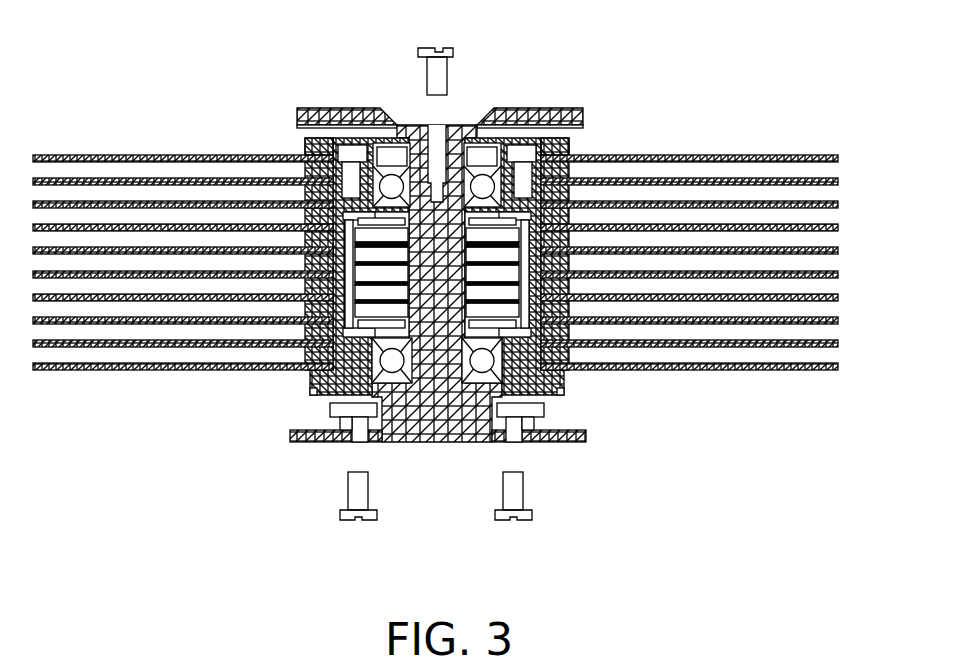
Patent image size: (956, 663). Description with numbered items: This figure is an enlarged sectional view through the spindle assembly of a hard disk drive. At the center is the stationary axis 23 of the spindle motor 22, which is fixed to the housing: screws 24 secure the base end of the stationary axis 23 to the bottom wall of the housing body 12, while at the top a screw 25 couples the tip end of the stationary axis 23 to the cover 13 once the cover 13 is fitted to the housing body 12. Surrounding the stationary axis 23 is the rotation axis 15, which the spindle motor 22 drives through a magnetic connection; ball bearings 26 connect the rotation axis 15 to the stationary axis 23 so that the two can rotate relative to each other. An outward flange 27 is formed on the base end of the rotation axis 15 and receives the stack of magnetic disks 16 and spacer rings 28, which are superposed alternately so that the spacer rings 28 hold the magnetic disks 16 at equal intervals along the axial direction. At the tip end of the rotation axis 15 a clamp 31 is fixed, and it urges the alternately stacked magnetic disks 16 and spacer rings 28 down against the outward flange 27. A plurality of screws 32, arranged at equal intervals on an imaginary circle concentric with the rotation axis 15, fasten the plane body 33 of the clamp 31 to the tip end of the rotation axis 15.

The housing body 12 is at (580, 444).
The cover 13 is at (525, 108).
The rotation axis 15 is at (545, 397).
The magnetic disks 16 is at (840, 158).
The spindle motor 22 is at (291, 391).
The stationary axis 23 is at (392, 443).
The screws 24 is at (340, 513).
The screw 25 is at (453, 50).
The ball bearings 26 is at (393, 163).
The outward flange 27 is at (563, 389).
The spacer rings 28 is at (572, 168).
The clamp 31 is at (571, 141).
The screws 32 is at (305, 168).
The plane body 33 is at (305, 140).